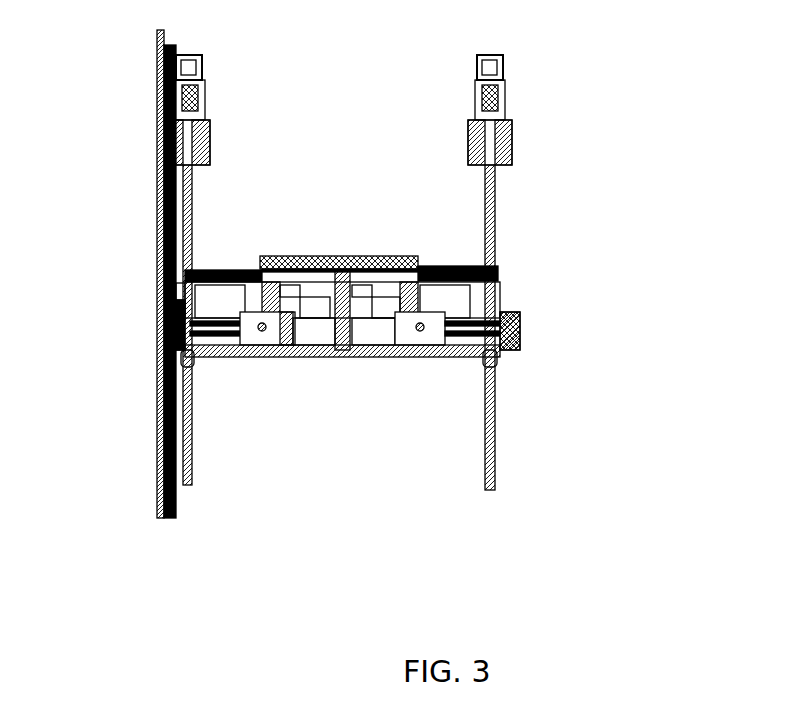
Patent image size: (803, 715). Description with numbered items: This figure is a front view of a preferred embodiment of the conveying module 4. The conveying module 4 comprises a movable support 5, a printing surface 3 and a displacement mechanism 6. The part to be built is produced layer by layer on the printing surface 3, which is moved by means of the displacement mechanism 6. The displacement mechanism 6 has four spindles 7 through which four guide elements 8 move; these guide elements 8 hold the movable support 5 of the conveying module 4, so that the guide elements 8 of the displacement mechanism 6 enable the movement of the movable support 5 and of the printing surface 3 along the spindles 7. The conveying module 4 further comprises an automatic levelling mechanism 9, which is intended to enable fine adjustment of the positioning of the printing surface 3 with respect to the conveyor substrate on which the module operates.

The printing surface 3 is at (332, 258).
The conveying module 4 is at (566, 452).
The movable support 5 is at (235, 268).
The displacement mechanism 6 is at (150, 338).
The spindle 7 is at (160, 218).
The guide element 8 is at (160, 320).
The automatic levelling mechanism 9 is at (370, 348).